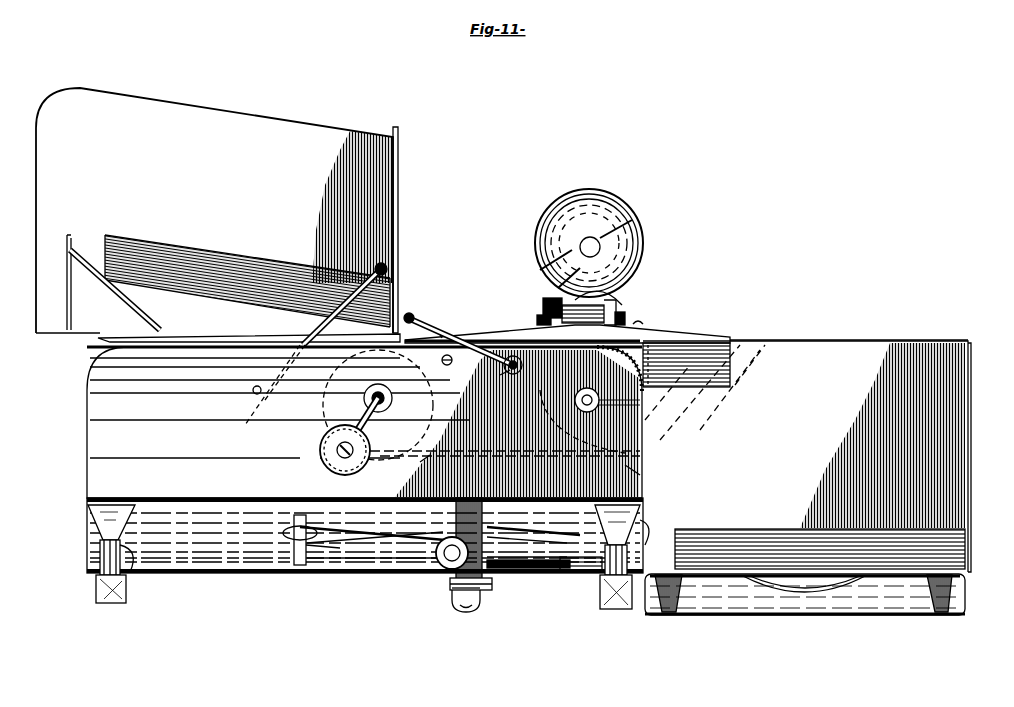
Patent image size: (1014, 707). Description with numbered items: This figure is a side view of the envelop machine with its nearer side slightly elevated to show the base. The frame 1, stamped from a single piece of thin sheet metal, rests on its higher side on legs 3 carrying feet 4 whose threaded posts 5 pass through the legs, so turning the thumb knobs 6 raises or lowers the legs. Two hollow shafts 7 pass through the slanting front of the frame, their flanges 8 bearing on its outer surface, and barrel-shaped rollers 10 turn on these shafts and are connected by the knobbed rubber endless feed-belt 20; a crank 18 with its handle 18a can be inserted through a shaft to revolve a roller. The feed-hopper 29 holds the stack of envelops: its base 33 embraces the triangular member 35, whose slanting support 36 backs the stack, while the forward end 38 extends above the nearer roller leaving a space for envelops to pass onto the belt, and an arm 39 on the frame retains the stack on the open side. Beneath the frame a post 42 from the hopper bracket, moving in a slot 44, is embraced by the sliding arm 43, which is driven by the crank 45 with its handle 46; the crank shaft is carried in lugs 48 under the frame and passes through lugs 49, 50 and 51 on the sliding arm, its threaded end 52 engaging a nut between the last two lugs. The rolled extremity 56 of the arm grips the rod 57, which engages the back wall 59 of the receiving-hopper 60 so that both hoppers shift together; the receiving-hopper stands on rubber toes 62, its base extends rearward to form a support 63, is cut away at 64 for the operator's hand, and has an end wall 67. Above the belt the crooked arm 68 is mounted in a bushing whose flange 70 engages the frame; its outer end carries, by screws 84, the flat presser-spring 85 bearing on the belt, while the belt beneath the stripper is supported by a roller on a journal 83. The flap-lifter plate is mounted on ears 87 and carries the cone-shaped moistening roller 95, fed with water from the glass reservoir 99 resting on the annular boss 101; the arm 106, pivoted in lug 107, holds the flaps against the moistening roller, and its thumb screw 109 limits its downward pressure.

The frame 1 is at (408, 411).
The legs 3 is at (125, 520).
The feet 4 is at (114, 604).
The threaded posts 5 is at (100, 584).
The thumb knobs 6 is at (130, 566).
The hollow shafts 7 is at (660, 388).
The flanges 8 is at (392, 400).
The rollers 10 is at (418, 462).
The crank 18 is at (362, 442).
The handle 18a is at (322, 452).
The endless feed-belt 20 is at (668, 458).
The feed-hopper 29 is at (273, 124).
The base of the feed-hopper 33 is at (106, 340).
The triangular member 35 is at (67, 286).
The slanting support 36 is at (118, 292).
The forward end of the feed-hopper 38 is at (398, 222).
The arm 39 is at (335, 347).
The post 42 is at (298, 566).
The sliding arm 43 is at (414, 540).
The slot 44 is at (306, 560).
The crank 45 is at (457, 532).
The handle 46 is at (441, 332).
The lugs 48 is at (482, 515).
The lug 49 is at (470, 553).
The lug 50 is at (492, 584).
The lug 51 is at (455, 592).
The threaded end 52 is at (466, 610).
The rolled extremity 56 is at (578, 572).
The rod 57 is at (548, 568).
The back wall 59 is at (880, 341).
The receiving-hopper 60 is at (805, 456).
The rubber toes 62 is at (670, 613).
The support 63 is at (903, 615).
The cut-away portion 64 is at (818, 598).
The end wall 67 is at (970, 470).
The crooked arm 68 is at (504, 366).
The flange 70 is at (508, 372).
The journal 83 is at (447, 366).
The screws 84 is at (414, 317).
The presser-spring 85 is at (470, 340).
The ears 87 is at (645, 327).
The moistening roller 95 is at (622, 303).
The reservoir 99 is at (632, 220).
The annular boss 101 is at (612, 312).
The arm 106 is at (537, 320).
The lug 107 is at (620, 318).
The thumb screw 109 is at (543, 306).